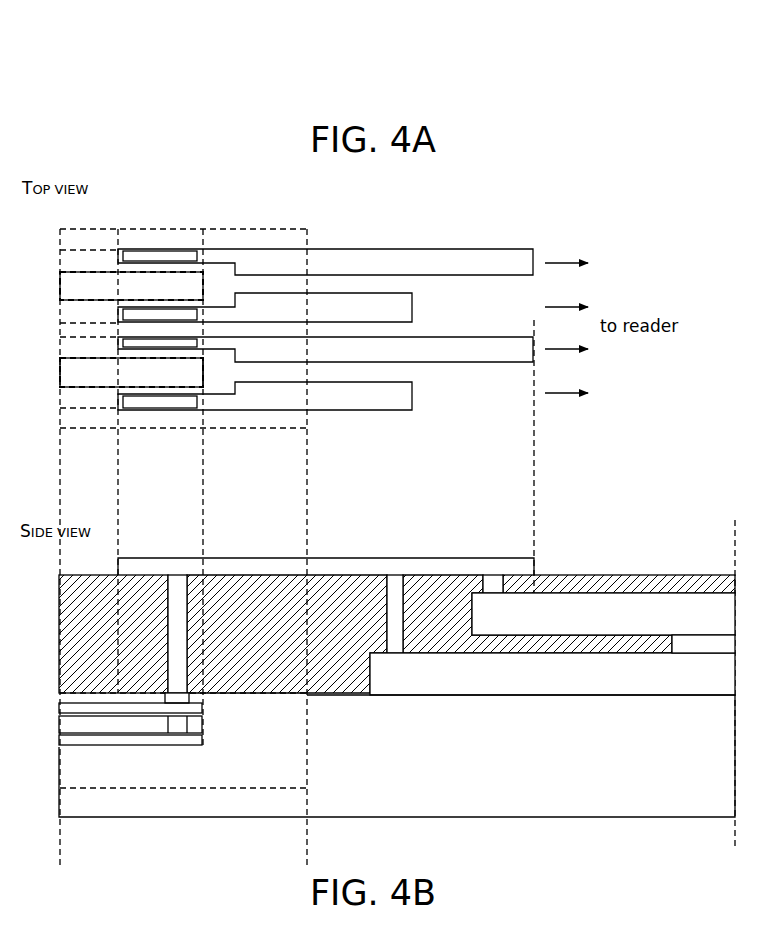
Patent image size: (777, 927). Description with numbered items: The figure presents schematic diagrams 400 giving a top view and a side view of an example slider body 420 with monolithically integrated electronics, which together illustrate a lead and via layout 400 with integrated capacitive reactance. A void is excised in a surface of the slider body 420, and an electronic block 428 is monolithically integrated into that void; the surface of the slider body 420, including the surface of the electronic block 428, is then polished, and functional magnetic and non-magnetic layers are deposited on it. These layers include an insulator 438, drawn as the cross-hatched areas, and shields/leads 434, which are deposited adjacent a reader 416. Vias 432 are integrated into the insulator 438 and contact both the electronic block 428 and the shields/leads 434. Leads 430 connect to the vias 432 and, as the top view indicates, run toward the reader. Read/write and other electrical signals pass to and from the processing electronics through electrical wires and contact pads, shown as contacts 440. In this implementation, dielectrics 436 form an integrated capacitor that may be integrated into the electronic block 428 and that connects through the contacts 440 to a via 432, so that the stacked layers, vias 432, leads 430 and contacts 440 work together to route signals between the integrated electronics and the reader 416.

In FIG. 4A, the schematic diagrams 400 is at (112, 56).
In FIG. 4B, the schematic diagrams 400 is at (668, 486).
In FIG. 4B, the reader 416 is at (692, 653).
In FIG. 4B, the slider body 420 is at (510, 781).
In FIG. 4A, the electronic block 428 is at (242, 246).
In FIG. 4B, the electronic block 428 is at (170, 781).
In FIG. 4A, the leads 430 is at (395, 348).
In FIG. 4B, the leads 430 is at (395, 568).
In FIG. 4A, the vias 432 is at (152, 331).
In FIG. 4B, the vias 432 is at (176, 630).
In FIG. 4A, the shields/leads 434 is at (119, 296).
In FIG. 4B, the shields/leads 434 is at (592, 621).
In FIG. 4B, the dielectrics 436 is at (130, 724).
In FIG. 4B, the insulator 438 is at (260, 675).
In FIG. 4B, the contacts 440 is at (172, 698).